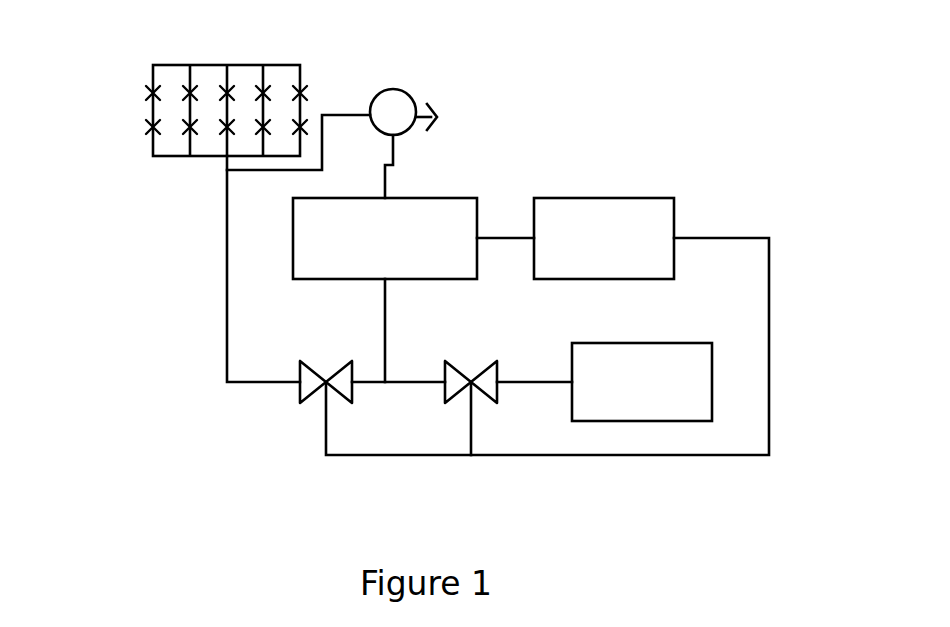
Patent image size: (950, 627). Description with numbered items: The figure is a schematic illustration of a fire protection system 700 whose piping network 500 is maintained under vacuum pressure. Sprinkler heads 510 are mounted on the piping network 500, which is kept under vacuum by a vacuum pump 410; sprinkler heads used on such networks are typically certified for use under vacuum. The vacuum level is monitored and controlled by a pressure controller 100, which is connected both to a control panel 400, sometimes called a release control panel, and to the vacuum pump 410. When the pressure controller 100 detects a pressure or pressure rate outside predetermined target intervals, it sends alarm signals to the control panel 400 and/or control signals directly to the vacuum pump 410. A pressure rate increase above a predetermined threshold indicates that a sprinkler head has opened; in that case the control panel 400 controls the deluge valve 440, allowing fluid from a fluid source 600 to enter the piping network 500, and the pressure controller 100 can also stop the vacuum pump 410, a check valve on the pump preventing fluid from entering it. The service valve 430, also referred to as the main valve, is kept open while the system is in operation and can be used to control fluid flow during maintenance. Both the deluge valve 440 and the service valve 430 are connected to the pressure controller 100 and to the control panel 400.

The pressure controller 100 is at (385, 238).
The control panel 400 is at (604, 238).
The vacuum pump 410 is at (428, 90).
The service valve 430 is at (471, 367).
The deluge valve 440 is at (326, 367).
The piping network 500 is at (176, 165).
The sprinkler heads 510 is at (132, 87).
The fluid source 600 is at (642, 382).
The fire protection system 700 is at (724, 132).